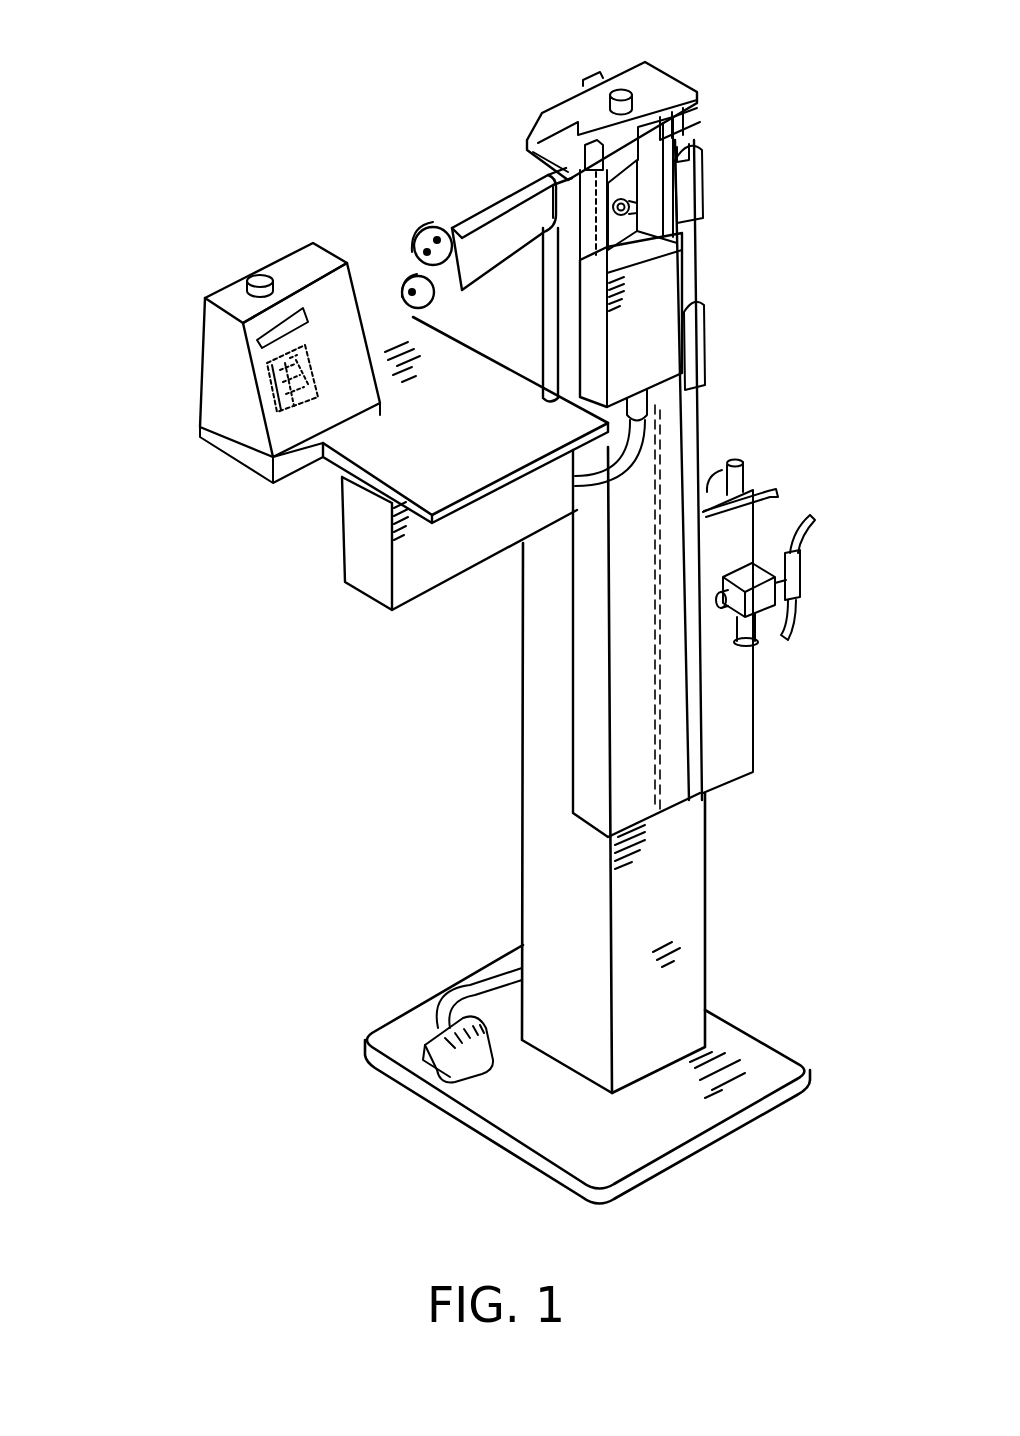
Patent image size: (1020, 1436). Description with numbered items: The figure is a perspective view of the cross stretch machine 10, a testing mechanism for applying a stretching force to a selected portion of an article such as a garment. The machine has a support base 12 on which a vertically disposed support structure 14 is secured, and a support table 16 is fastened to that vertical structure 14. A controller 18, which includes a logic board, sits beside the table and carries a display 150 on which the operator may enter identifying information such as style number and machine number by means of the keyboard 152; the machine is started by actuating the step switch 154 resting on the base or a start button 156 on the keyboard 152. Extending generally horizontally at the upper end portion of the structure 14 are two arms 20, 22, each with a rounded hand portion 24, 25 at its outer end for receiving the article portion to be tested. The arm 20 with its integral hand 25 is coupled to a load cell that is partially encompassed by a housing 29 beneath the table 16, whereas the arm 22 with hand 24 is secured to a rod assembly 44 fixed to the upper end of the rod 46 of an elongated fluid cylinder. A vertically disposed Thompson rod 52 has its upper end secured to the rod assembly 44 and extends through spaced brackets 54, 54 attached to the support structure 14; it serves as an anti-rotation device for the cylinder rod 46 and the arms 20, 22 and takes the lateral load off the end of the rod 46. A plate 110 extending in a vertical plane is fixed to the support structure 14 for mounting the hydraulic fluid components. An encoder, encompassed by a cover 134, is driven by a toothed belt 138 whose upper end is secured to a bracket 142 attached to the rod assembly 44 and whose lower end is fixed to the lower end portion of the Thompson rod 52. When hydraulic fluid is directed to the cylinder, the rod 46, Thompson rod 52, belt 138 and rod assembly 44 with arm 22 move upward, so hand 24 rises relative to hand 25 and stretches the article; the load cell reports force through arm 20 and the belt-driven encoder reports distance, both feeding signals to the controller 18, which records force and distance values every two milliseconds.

The cross stretch machine 10 is at (300, 681).
The support base 12 is at (622, 1156).
The vertically disposed support structure 14 is at (518, 784).
The support table 16 is at (465, 450).
The controller 18 is at (222, 390).
The arm 20 is at (510, 226).
The arm 22 is at (509, 292).
The rounded hand portion 24 is at (376, 230).
The rounded hand portion 25 is at (400, 277).
The housing 29 is at (425, 578).
The rod assembly 44 is at (553, 94).
The rod 46 is at (632, 92).
The Thompson rod 52 is at (700, 420).
The brackets 54 is at (700, 187).
The plate 110 is at (738, 703).
The cover 134 is at (668, 277).
The toothed belt 138 is at (655, 458).
The bracket 142 is at (665, 122).
The display 150 is at (267, 333).
The keyboard 152 is at (262, 417).
The step switch 154 is at (435, 1047).
The start button 156 is at (258, 409).